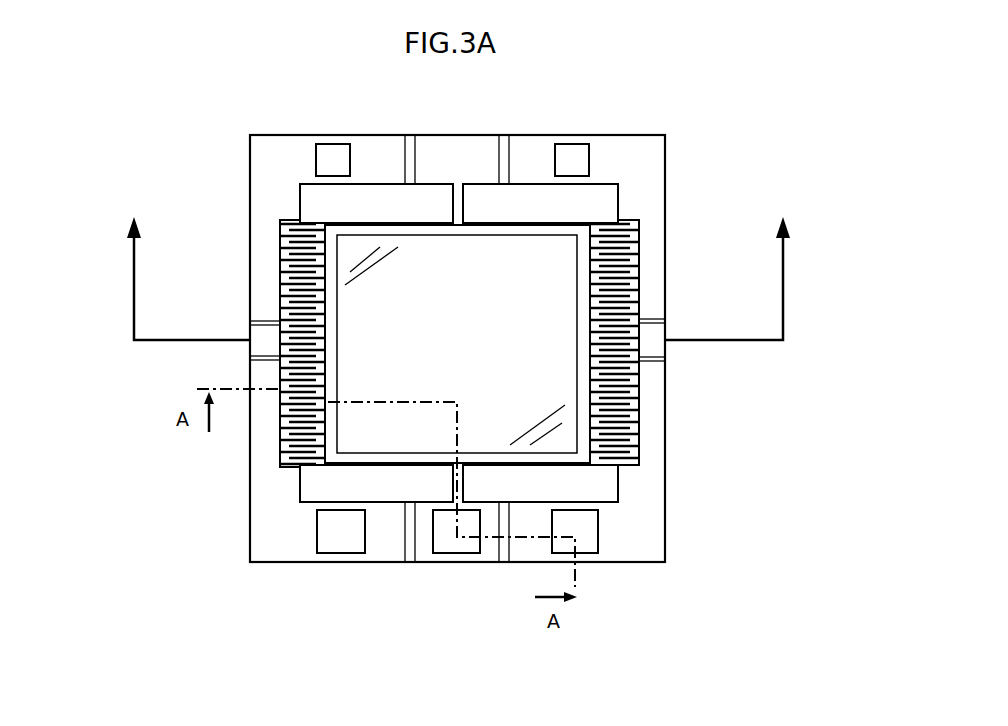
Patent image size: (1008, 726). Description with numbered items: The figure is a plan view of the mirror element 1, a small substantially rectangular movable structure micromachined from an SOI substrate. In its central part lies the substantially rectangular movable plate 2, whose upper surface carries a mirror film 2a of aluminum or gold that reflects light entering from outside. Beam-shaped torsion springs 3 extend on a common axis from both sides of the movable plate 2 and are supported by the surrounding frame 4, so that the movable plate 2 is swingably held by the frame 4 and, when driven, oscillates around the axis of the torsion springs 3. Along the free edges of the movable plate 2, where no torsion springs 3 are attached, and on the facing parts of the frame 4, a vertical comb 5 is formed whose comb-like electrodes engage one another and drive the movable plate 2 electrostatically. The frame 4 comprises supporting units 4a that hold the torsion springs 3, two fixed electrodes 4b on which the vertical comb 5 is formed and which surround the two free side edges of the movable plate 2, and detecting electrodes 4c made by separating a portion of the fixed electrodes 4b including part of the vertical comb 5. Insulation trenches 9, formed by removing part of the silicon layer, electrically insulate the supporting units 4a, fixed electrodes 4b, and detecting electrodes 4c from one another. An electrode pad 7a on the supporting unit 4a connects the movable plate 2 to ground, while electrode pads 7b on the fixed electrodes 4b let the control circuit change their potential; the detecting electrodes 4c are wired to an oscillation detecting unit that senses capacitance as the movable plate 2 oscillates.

The mirror element 1 is at (123, 106).
The movable plate 2 is at (375, 213).
The mirror film 2a is at (398, 434).
The torsion springs 3 is at (463, 212).
The frame 4 is at (244, 163).
The supporting units 4a is at (456, 160).
The fixed electrodes 4b is at (282, 546).
The detecting electrodes 4c is at (263, 340).
The vertical comb 5 is at (297, 278).
The electrode pad 7a is at (445, 546).
The electrode pad 7b is at (333, 156).
The insulation trenches 9 is at (412, 156).